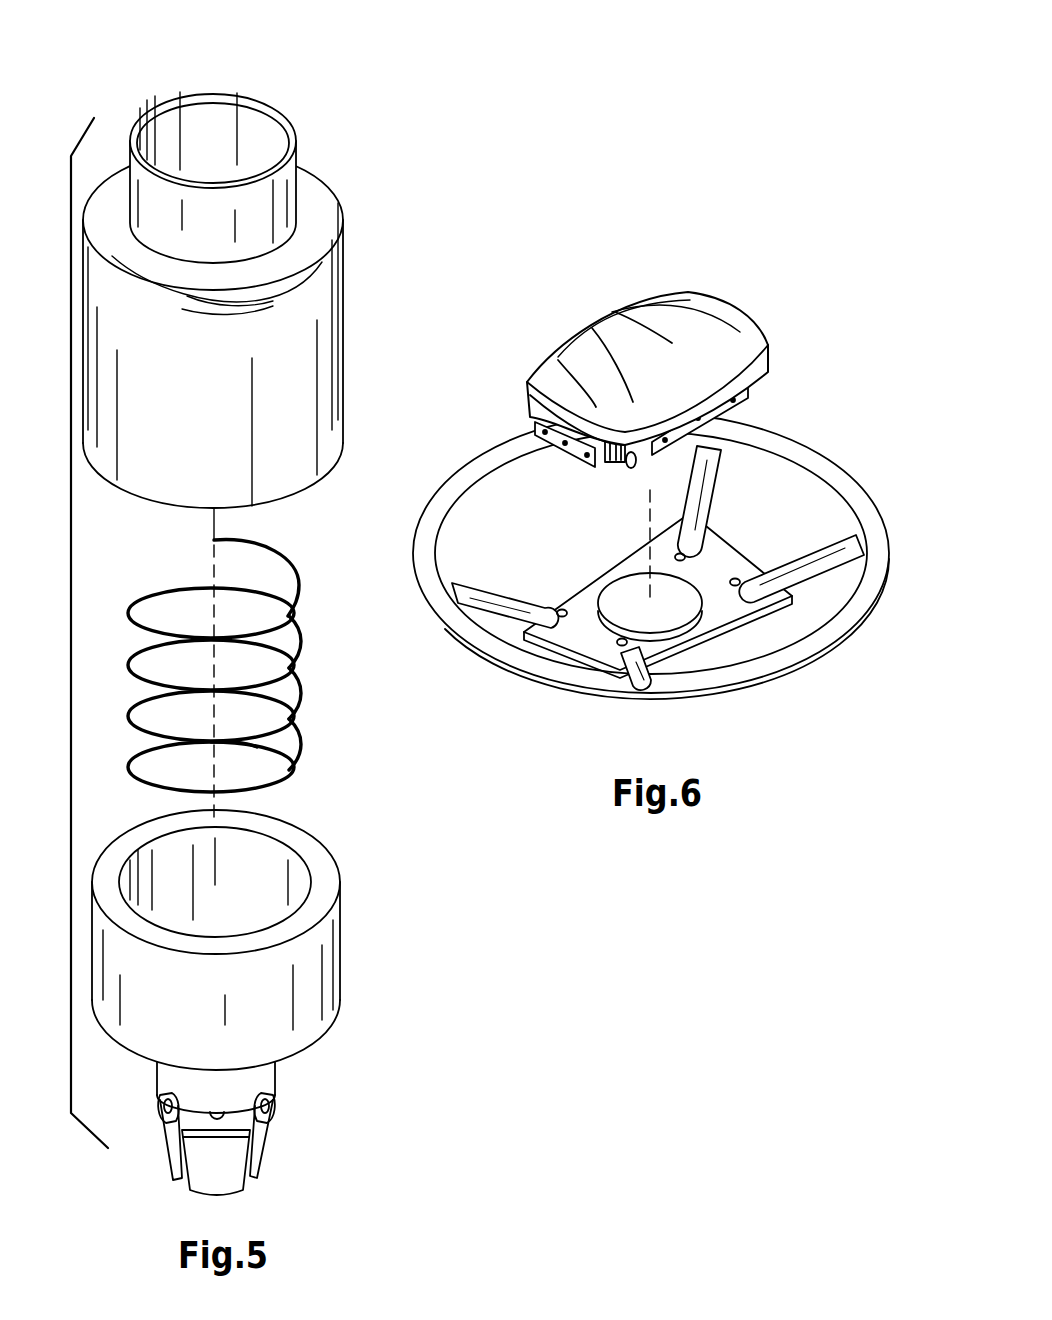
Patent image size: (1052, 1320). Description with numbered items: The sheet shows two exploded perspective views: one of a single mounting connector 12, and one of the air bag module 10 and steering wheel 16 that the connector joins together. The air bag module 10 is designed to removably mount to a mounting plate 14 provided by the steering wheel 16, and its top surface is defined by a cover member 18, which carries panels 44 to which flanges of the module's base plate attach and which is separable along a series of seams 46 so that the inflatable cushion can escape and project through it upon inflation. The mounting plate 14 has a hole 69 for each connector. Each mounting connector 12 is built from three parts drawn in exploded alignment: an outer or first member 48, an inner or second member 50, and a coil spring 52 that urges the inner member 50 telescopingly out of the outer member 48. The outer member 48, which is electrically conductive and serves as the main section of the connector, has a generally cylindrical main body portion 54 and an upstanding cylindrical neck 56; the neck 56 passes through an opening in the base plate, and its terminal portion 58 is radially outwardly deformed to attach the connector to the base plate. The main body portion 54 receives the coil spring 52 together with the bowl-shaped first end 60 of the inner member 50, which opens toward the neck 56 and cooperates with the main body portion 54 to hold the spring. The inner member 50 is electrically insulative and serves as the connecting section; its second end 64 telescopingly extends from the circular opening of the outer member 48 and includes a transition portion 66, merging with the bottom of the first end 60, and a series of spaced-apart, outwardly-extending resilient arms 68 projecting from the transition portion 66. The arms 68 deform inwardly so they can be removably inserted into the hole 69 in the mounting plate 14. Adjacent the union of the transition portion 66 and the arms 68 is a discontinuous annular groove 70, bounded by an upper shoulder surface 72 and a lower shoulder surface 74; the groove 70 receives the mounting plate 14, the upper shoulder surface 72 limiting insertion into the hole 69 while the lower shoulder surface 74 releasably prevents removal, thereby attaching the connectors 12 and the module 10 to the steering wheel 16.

In FIG. 6, the air bag module 10 is at (651, 483).
In FIG. 5, the mounting connector 12 is at (71, 665).
In FIG. 6, the mounting plate 14 is at (658, 568).
In FIG. 6, the steering wheel 16 is at (651, 563).
In FIG. 6, the cover member 18 is at (619, 356).
In FIG. 6, the panels 44 is at (500, 447).
In FIG. 6, the seams 46 is at (630, 332).
In FIG. 5, the outer member 48 is at (278, 271).
In FIG. 5, the inner member 50 is at (292, 940).
In FIG. 5, the coil spring 52 is at (312, 679).
In FIG. 5, the main body portion 54 is at (305, 362).
In FIG. 5, the cylindrical neck 56 is at (276, 193).
In FIG. 5, the terminal portion 58 is at (255, 107).
In FIG. 5, the first end 60 is at (308, 960).
In FIG. 5, the second end 64 is at (275, 1156).
In FIG. 5, the transition portion 66 is at (272, 1063).
In FIG. 5, the resilient arms 68 is at (170, 1157).
In FIG. 6, the hole 69 is at (619, 639).
In FIG. 5, the annular groove 70 is at (260, 1108).
In FIG. 5, the upper shoulder surface 72 is at (220, 1112).
In FIG. 5, the lower shoulder surface 74 is at (167, 1103).